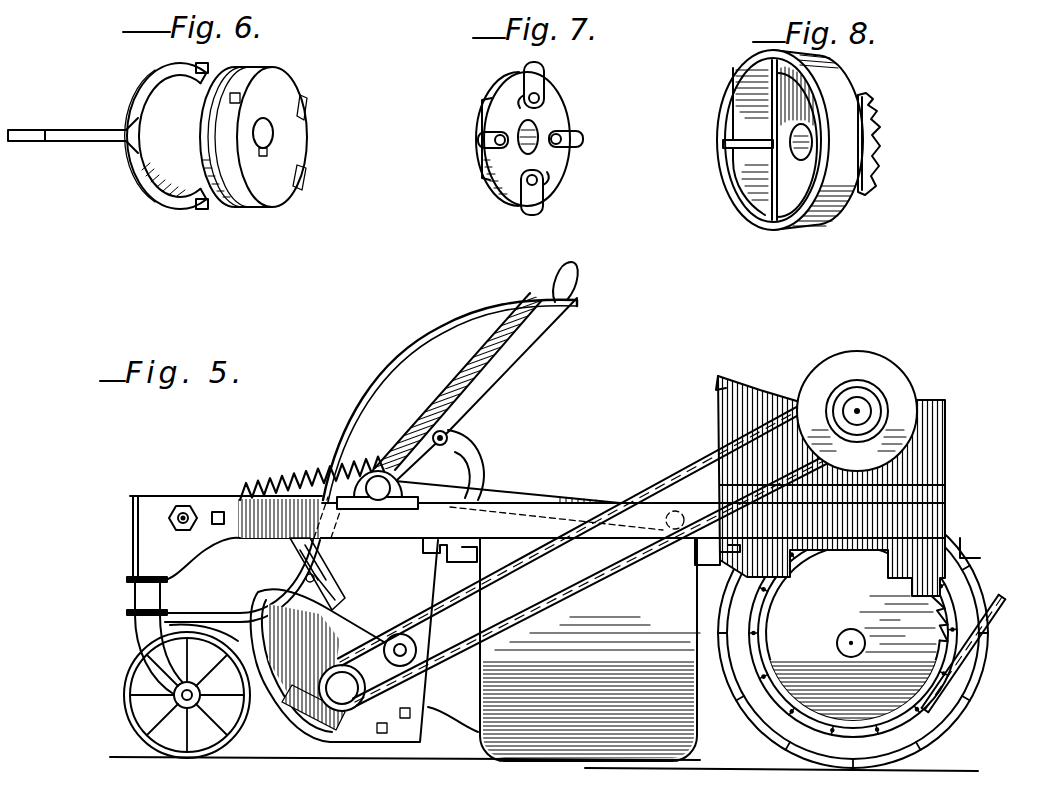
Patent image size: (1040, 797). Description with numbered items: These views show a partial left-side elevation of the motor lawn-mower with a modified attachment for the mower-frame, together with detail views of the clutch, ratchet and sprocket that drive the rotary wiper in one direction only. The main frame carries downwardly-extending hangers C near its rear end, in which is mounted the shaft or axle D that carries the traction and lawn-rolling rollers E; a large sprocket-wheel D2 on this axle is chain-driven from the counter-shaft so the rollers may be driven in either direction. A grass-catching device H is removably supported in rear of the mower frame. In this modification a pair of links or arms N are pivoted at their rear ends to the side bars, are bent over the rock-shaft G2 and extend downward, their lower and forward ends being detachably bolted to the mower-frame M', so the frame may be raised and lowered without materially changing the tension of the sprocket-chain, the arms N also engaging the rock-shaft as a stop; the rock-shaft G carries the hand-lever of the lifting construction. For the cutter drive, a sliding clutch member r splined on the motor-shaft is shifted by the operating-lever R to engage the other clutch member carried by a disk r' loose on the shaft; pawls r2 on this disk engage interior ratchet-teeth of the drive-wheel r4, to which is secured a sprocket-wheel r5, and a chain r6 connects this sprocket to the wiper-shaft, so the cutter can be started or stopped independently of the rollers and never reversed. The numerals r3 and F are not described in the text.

In FIG. 6, the operating-lever R is at (90, 142).
In FIG. 6, the sliding clutch member r is at (264, 125).
In FIG. 7, the disk r' is at (501, 139).
In FIG. 7, the pawls r2 is at (586, 137).
In FIG. 8, the cross bar of drum r3 is at (768, 218).
In FIG. 8, the drive-wheel r4 is at (808, 232).
In FIG. 5, the drive-wheel r4 is at (897, 370).
In FIG. 8, the sprocket-wheel r5 is at (866, 183).
In FIG. 5, the curved hand lever F is at (447, 320).
In FIG. 5, the rock-shaft G is at (507, 353).
In FIG. 5, the rock-shaft G2 is at (378, 500).
In FIG. 5, the links or arms N is at (563, 489).
In FIG. 5, the hangers C is at (930, 557).
In FIG. 5, the shaft or axle D is at (853, 633).
In FIG. 5, the large sprocket-wheel D2 is at (899, 594).
In FIG. 5, the traction and lawn-rolling rollers E is at (967, 687).
In FIG. 5, the grass-catching device H is at (564, 649).
In FIG. 5, the chain r6 is at (577, 597).
In FIG. 5, the mower-frame M' is at (344, 641).